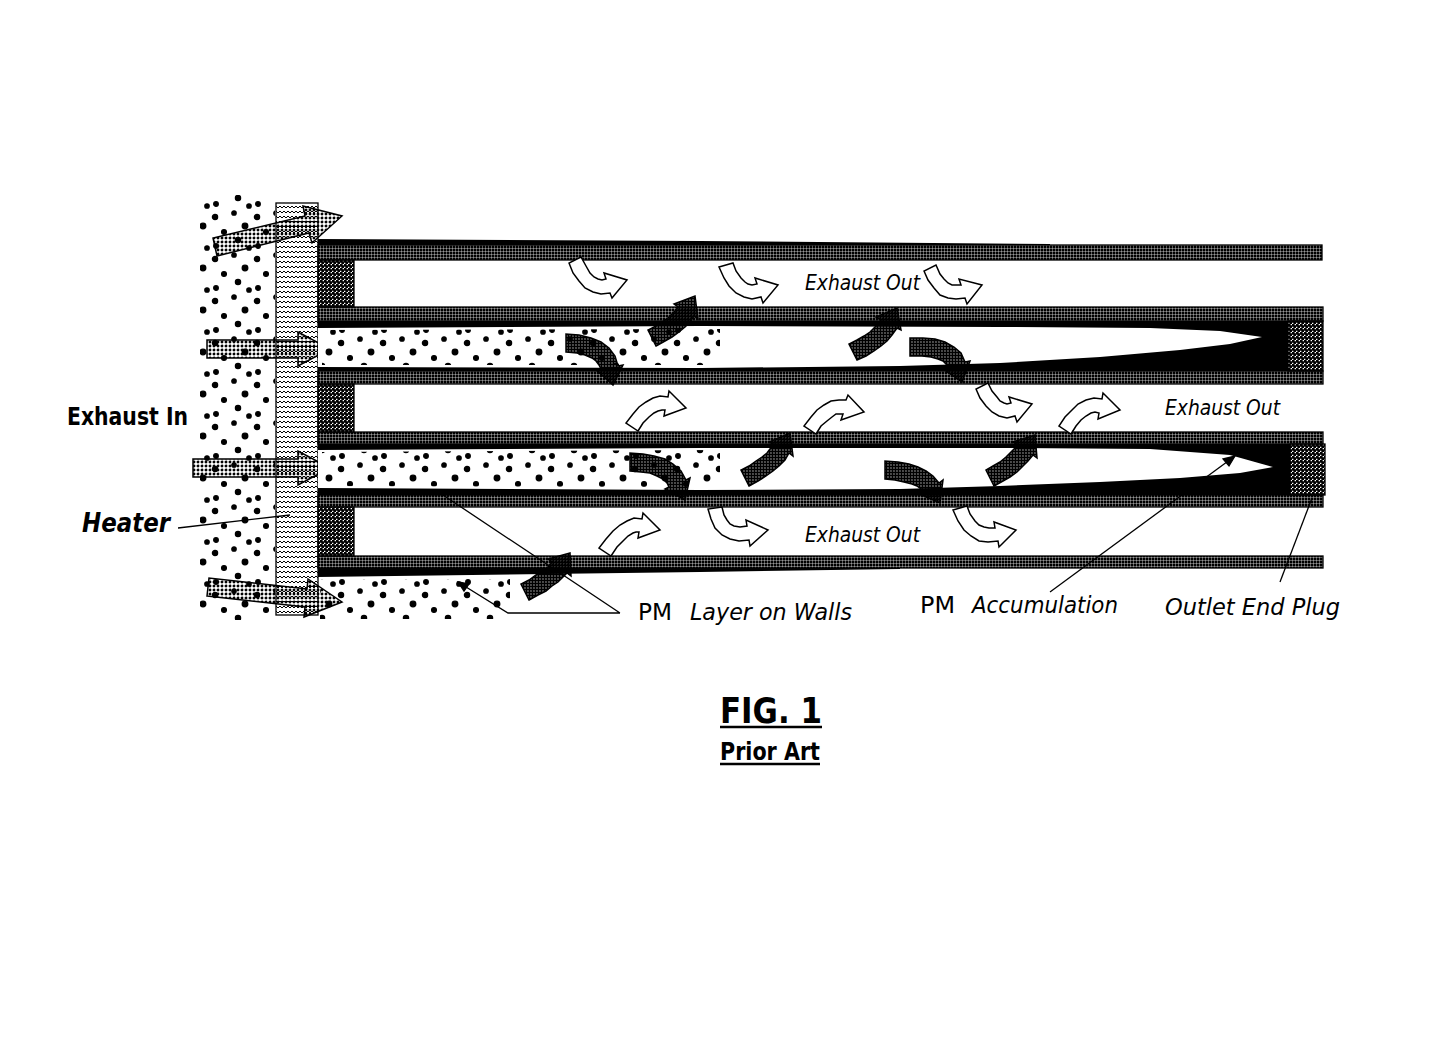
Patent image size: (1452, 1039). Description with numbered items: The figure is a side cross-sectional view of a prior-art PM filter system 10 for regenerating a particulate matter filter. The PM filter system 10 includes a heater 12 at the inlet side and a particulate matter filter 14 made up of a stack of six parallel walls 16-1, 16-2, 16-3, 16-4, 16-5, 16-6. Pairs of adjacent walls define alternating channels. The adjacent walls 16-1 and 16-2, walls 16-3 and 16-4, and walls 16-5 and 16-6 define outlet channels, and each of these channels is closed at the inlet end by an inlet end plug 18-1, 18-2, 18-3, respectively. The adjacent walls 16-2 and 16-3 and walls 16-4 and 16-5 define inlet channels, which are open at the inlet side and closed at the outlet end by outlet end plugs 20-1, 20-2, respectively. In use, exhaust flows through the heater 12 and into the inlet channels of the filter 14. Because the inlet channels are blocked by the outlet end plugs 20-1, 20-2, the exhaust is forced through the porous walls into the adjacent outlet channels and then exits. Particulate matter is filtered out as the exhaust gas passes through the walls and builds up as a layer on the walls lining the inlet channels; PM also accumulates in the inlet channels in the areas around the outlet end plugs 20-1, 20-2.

The PM filter system 10 is at (957, 156).
The heater 12 is at (313, 200).
The particulate matter filter 14 is at (1240, 229).
The wall 16-1 is at (1073, 245).
The wall 16-2 is at (1310, 307).
The wall 16-3 is at (1313, 381).
The wall 16-4 is at (1313, 433).
The wall 16-5 is at (1325, 504).
The wall 16-6 is at (1325, 559).
The inlet end plug 18-1 is at (362, 283).
The inlet end plug 18-2 is at (357, 413).
The inlet end plug 18-3 is at (357, 538).
The outlet end plug 20-1 is at (1325, 347).
The outlet end plug 20-2 is at (1327, 482).